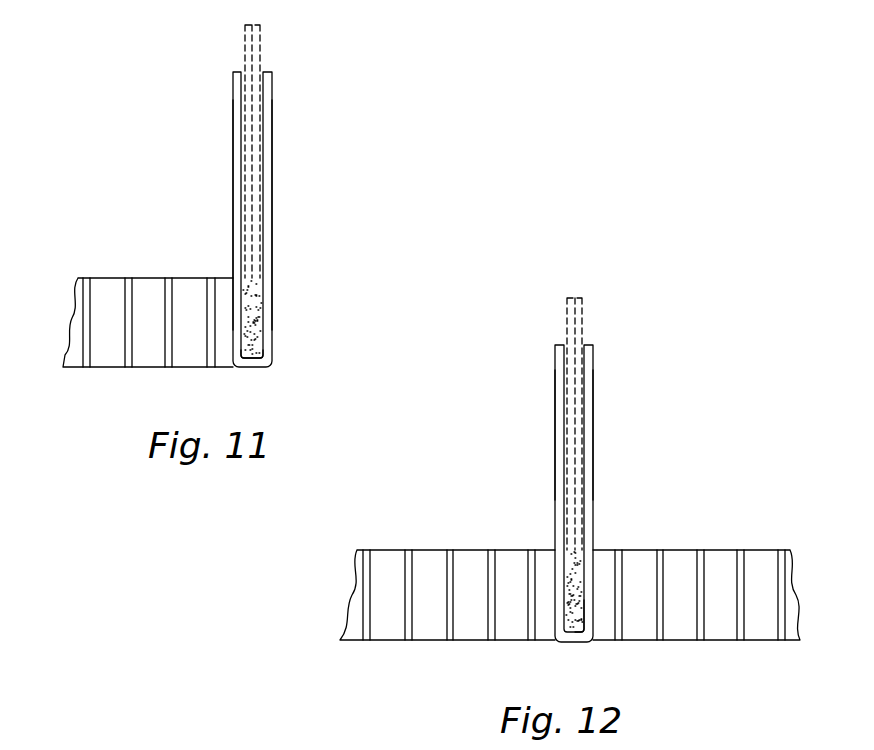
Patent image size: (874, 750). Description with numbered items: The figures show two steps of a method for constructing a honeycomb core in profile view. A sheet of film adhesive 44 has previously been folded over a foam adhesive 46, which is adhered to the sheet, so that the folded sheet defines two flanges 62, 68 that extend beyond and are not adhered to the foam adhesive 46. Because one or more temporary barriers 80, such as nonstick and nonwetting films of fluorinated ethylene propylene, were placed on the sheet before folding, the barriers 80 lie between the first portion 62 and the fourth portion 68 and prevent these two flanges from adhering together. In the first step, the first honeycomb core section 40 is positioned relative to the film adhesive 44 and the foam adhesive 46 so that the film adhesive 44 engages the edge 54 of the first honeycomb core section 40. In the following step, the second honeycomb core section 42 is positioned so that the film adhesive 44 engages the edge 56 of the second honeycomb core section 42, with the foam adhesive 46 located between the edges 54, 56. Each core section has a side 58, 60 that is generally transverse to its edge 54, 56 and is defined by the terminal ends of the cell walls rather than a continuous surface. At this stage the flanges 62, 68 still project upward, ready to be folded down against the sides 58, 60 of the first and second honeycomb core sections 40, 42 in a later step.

In FIG. 11, the first honeycomb core section 40 is at (68, 300).
In FIG. 12, the first honeycomb core section 40 is at (349, 578).
In FIG. 12, the second honeycomb core section 42 is at (805, 593).
In FIG. 11, the film adhesive 44 is at (281, 90).
In FIG. 12, the film adhesive 44 is at (601, 479).
In FIG. 11, the foam adhesive 46 is at (250, 358).
In FIG. 11, the edge of the first honeycomb core section 54 is at (241, 353).
In FIG. 12, the edge of the first honeycomb core section 54 is at (563, 623).
In FIG. 12, the edge of the second honeycomb core section 56 is at (593, 610).
In FIG. 11, the side of the first honeycomb core section 58 is at (158, 277).
In FIG. 12, the side of the first honeycomb core section 58 is at (428, 550).
In FIG. 12, the side of the second honeycomb core section 60 is at (723, 550).
In FIG. 11, the first portion 62 is at (233, 175).
In FIG. 12, the first portion 62 is at (555, 448).
In FIG. 11, the fourth portion 68 is at (274, 145).
In FIG. 12, the fourth portion 68 is at (593, 418).
In FIG. 11, the temporary barrier 80 is at (262, 46).
In FIG. 12, the temporary barrier 80 is at (583, 320).